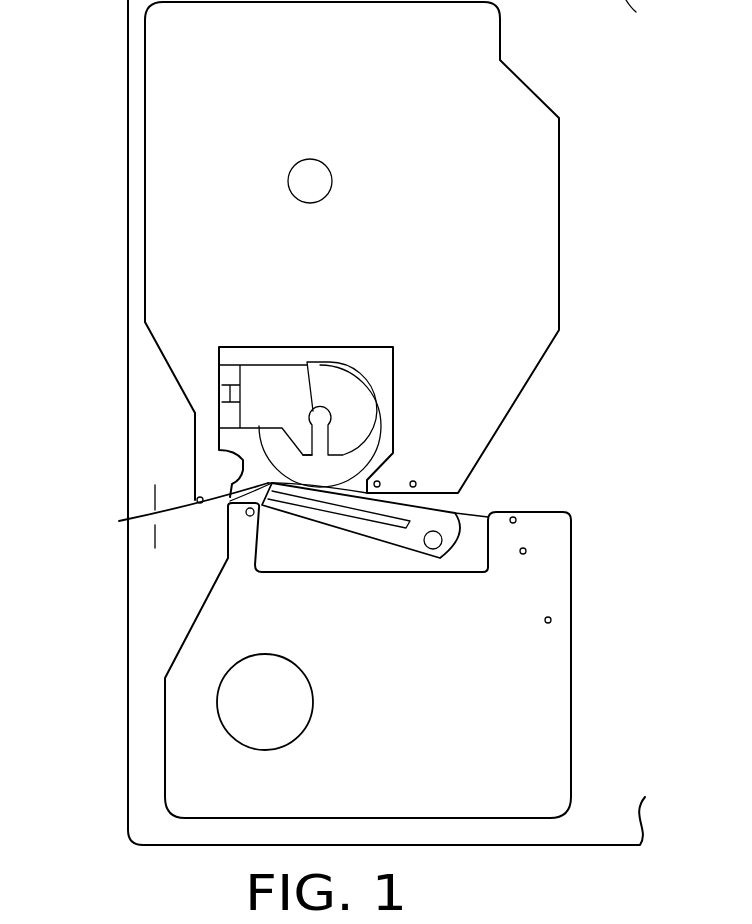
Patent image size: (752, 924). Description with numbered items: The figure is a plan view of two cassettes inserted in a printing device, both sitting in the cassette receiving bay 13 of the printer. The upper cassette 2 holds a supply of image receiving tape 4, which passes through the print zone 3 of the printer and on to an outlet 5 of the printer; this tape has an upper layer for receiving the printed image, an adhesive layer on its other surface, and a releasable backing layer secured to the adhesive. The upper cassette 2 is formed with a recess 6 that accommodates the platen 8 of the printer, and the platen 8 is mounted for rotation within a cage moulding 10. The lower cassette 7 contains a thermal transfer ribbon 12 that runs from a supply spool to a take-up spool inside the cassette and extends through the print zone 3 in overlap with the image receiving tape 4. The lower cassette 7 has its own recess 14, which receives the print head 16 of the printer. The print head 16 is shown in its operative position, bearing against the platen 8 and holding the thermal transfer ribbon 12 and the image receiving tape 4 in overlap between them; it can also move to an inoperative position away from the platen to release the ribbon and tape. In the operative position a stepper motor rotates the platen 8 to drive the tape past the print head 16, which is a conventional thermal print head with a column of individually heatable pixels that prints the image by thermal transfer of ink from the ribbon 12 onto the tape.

The cassette receiving bay 13 is at (128, 1).
The upper cassette 2 is at (492, 201).
The lower cassette 7 is at (498, 759).
The platen 8 is at (357, 372).
The cage moulding 10 is at (338, 417).
The recess 6 is at (397, 423).
The print zone 3 is at (268, 472).
The image receiving tape 4 is at (142, 514).
The outlet 5 is at (138, 532).
The thermal transfer ribbon 12 is at (467, 512).
The recess 14 is at (487, 571).
The print head 16 is at (333, 517).